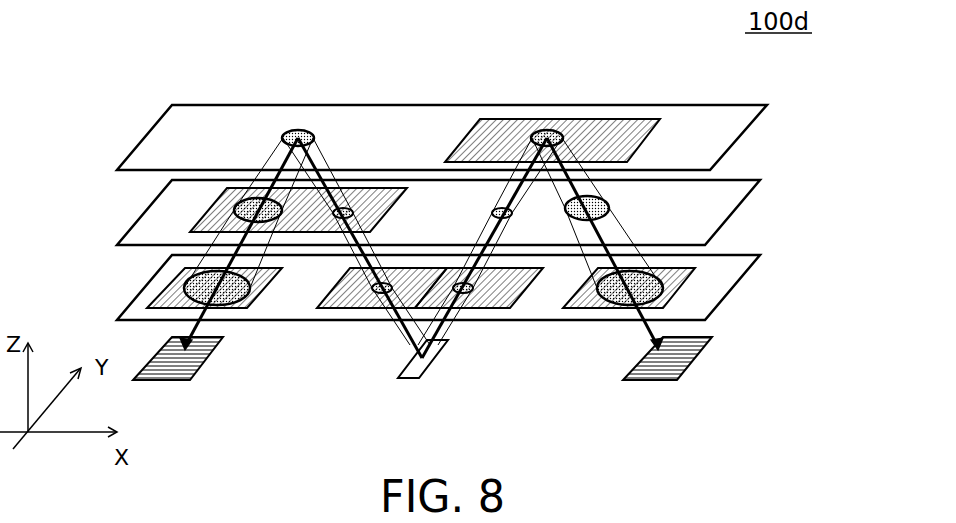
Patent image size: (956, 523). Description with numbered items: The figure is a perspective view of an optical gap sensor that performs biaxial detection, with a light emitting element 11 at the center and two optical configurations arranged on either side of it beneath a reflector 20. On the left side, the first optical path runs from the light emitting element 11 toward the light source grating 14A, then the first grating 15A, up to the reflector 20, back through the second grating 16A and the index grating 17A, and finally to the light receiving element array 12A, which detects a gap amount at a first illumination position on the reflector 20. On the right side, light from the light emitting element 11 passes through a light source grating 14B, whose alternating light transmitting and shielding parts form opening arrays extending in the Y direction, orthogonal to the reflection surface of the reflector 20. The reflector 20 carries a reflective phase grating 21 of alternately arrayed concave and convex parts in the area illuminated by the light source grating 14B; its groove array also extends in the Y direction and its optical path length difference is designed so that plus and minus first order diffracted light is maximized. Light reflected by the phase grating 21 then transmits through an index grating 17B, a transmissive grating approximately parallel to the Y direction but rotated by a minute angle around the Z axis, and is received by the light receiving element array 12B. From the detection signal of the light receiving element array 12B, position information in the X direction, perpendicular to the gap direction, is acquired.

The reflector 20 is at (142, 140).
The reflective phase grating 21 is at (583, 118).
The first grating 15A is at (367, 185).
The second grating 16A is at (200, 215).
The index grating 17A is at (160, 290).
The index grating 17B is at (690, 285).
The light source grating 14A is at (340, 310).
The light source grating 14B is at (517, 298).
The light receiving element array 12A is at (195, 372).
The light receiving element array 12B is at (693, 363).
The light emitting element 11 is at (420, 373).